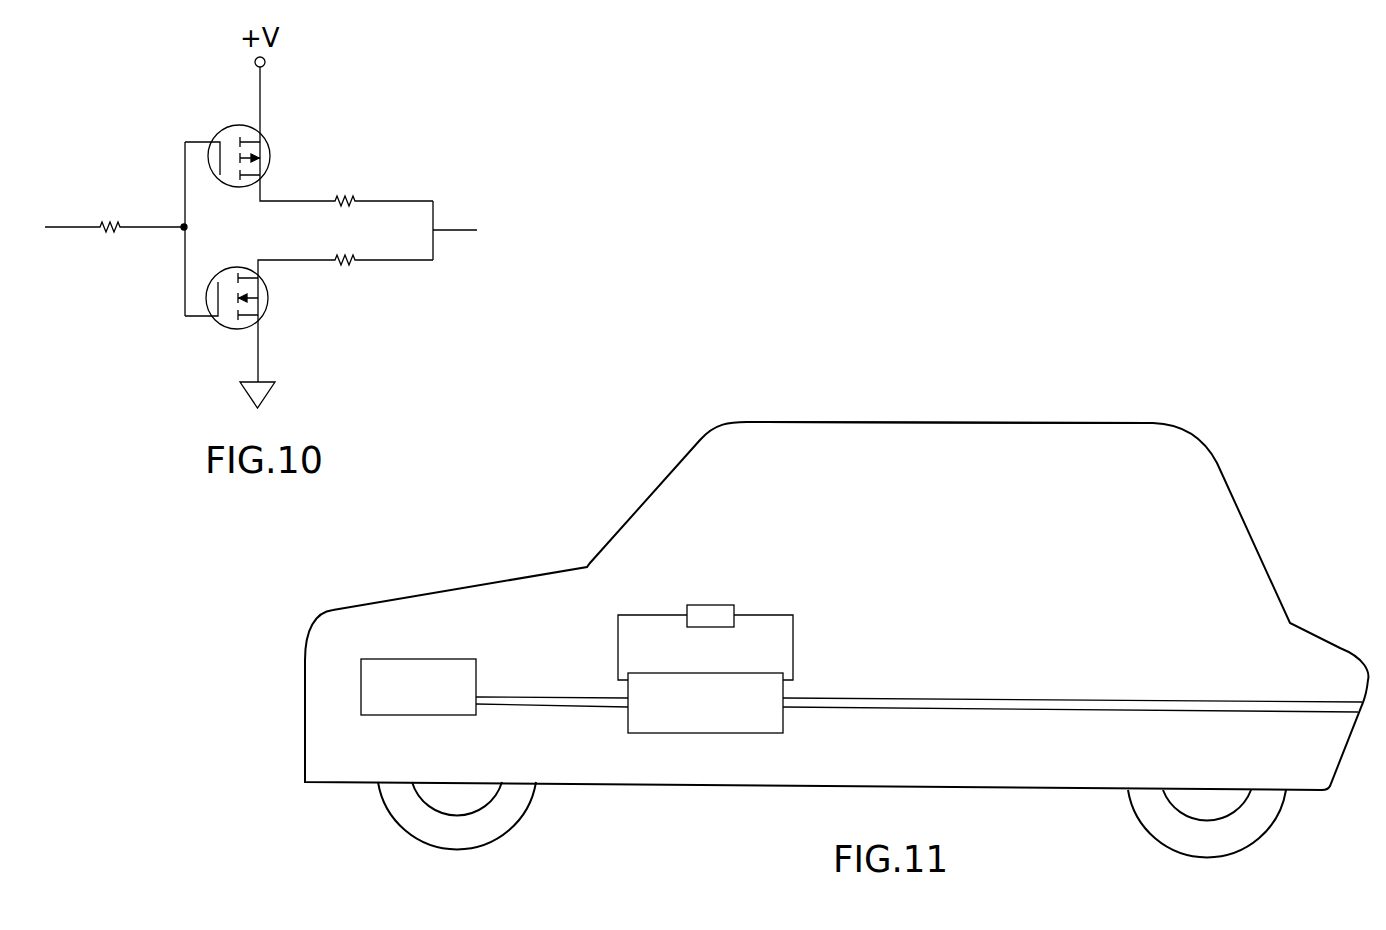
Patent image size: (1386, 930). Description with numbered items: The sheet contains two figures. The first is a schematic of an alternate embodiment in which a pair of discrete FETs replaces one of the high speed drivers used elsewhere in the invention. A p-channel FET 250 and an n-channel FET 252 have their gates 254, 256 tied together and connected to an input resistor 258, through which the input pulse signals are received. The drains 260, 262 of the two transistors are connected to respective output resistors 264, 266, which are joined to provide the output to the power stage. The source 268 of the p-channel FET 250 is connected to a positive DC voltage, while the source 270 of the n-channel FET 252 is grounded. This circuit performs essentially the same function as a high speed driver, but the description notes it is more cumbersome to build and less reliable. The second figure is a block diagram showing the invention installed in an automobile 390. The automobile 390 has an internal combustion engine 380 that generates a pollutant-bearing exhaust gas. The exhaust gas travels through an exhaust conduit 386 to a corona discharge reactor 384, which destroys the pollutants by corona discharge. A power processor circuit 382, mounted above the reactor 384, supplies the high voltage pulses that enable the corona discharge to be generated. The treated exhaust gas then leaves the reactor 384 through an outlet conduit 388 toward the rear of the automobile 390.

In FIG. 10, the p-channel FET 250 is at (212, 168).
In FIG. 10, the n-channel FET 252 is at (210, 285).
In FIG. 10, the gate of p-channel FET 254 is at (220, 160).
In FIG. 10, the gate of n-channel FET 256 is at (205, 324).
In FIG. 10, the input resistor 258 is at (108, 222).
In FIG. 10, the drain of p-channel FET 260 is at (260, 176).
In FIG. 10, the drain of n-channel FET 262 is at (260, 278).
In FIG. 10, the output resistor 264 is at (357, 200).
In FIG. 10, the output resistor 266 is at (357, 262).
In FIG. 10, the source of p-channel FET 268 is at (262, 140).
In FIG. 10, the source of n-channel FET 270 is at (260, 322).
In FIG. 11, the internal combustion engine 380 is at (423, 658).
In FIG. 11, the power processor circuit 382 is at (713, 605).
In FIG. 11, the corona discharge reactor 384 is at (705, 733).
In FIG. 11, the exhaust conduit 386 is at (540, 707).
In FIG. 11, the outlet conduit 388 is at (1330, 700).
In FIG. 11, the automobile 390 is at (1100, 423).